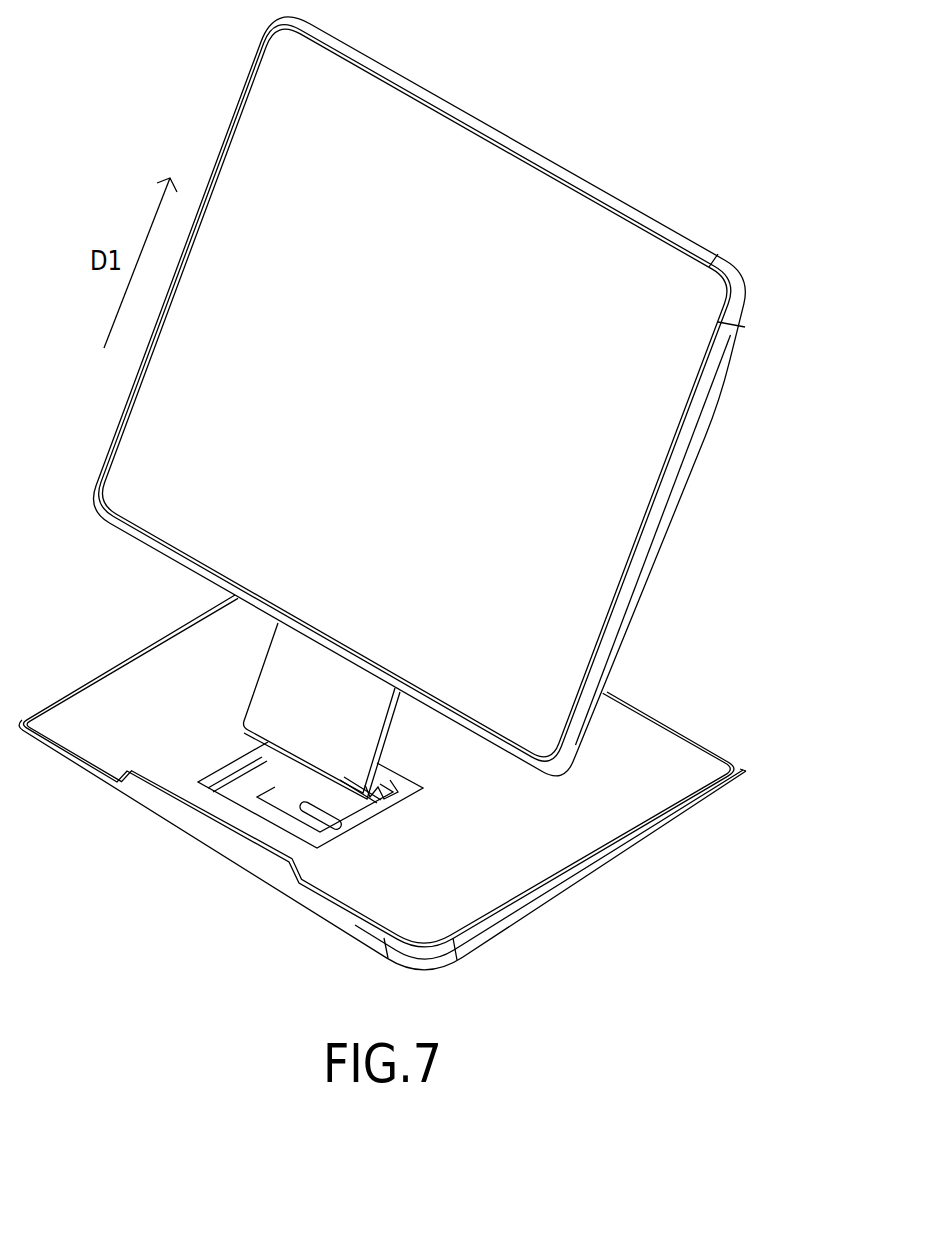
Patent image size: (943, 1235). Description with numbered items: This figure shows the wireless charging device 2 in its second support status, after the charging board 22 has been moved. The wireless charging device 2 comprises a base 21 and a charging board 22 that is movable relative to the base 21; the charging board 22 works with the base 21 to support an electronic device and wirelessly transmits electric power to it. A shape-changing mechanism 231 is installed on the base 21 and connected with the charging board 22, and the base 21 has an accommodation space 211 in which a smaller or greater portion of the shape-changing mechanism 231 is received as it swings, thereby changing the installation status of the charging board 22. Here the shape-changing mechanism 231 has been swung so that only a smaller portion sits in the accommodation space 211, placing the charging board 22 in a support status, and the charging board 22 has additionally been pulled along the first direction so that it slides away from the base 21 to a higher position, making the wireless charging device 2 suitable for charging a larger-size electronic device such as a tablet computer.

The wireless charging device 2 is at (623, 45).
The base 21 is at (650, 738).
The charging board 22 is at (596, 229).
The accommodation space 211 is at (248, 777).
The shape-changing mechanism 231 is at (386, 788).